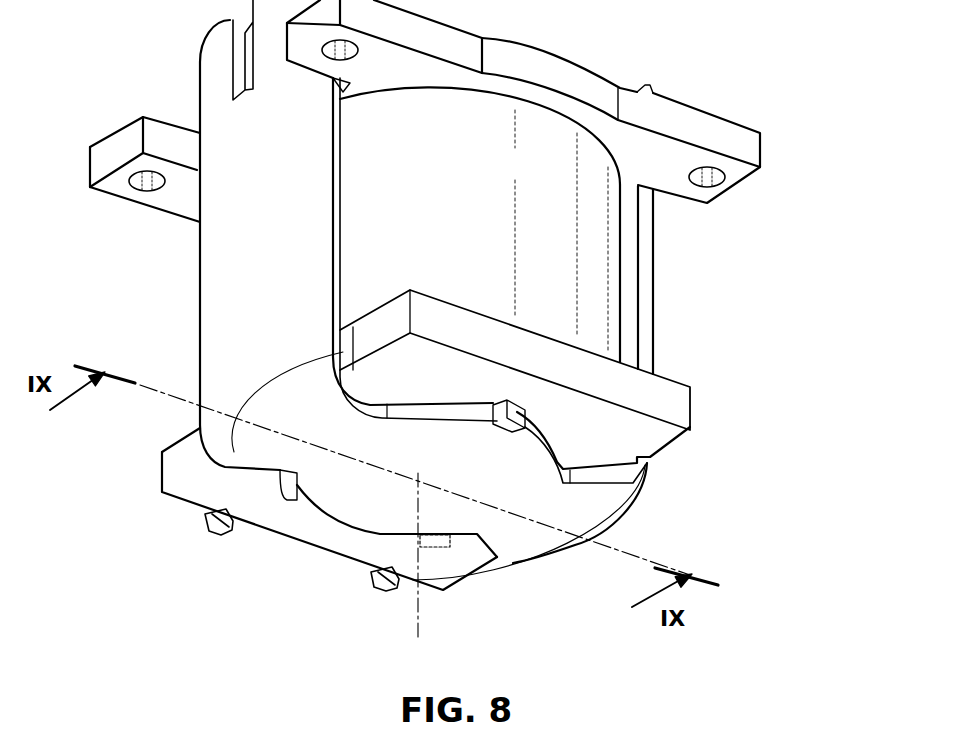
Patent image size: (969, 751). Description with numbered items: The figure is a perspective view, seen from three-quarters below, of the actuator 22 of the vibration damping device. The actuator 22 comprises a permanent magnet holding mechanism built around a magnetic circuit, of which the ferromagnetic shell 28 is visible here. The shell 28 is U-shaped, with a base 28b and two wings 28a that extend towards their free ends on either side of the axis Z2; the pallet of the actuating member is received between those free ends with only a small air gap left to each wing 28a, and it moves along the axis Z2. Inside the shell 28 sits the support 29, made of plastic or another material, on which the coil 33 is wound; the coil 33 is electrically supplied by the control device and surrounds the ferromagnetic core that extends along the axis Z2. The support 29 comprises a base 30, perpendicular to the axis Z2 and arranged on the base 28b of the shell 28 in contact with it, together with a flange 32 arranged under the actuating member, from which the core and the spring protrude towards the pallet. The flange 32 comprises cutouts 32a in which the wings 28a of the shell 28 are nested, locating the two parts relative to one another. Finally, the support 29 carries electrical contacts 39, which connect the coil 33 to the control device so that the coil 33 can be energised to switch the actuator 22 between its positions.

The actuator 22 is at (480, 333).
The ferromagnetic shell 28 is at (425, 333).
The wings 28a is at (645, 258).
The base 28b is at (404, 546).
The support 29 is at (480, 121).
The base 30 is at (560, 362).
The flange 32 is at (655, 158).
The cutouts 32a is at (163, 137).
The coil 33 is at (570, 281).
The electrical contacts 39 is at (217, 535).
The axis Z2 is at (420, 620).